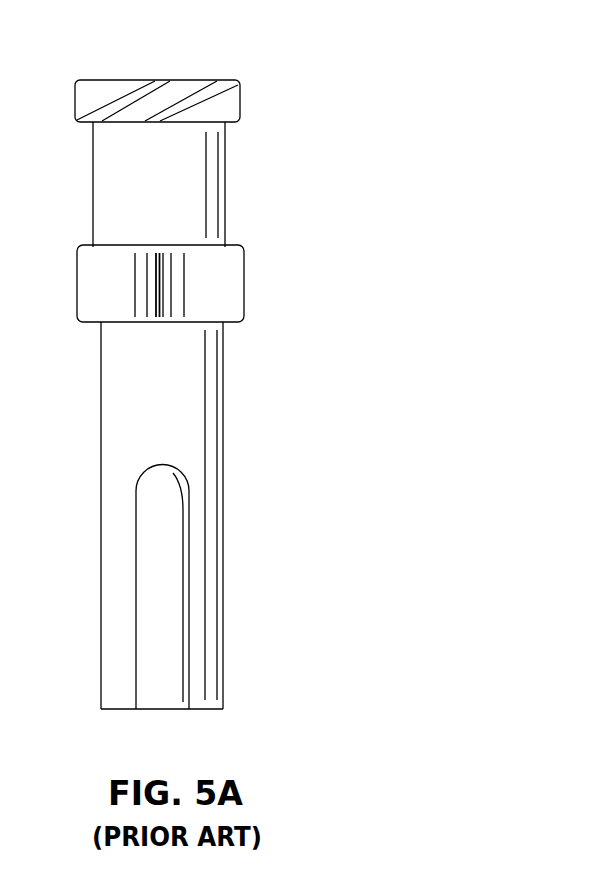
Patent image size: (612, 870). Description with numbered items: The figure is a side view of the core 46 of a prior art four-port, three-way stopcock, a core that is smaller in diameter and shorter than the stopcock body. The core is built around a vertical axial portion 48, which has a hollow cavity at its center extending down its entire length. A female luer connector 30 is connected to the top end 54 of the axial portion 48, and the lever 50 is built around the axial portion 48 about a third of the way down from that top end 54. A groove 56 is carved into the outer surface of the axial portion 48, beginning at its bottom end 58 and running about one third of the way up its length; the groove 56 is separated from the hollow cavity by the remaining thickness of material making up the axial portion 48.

The core 46 is at (105, 60).
The female luer connector 30 is at (240, 97).
The top end 54 is at (193, 80).
The axial portion 48 is at (225, 170).
The lever 50 is at (244, 287).
The groove 56 is at (173, 535).
The bottom end 58 is at (207, 709).